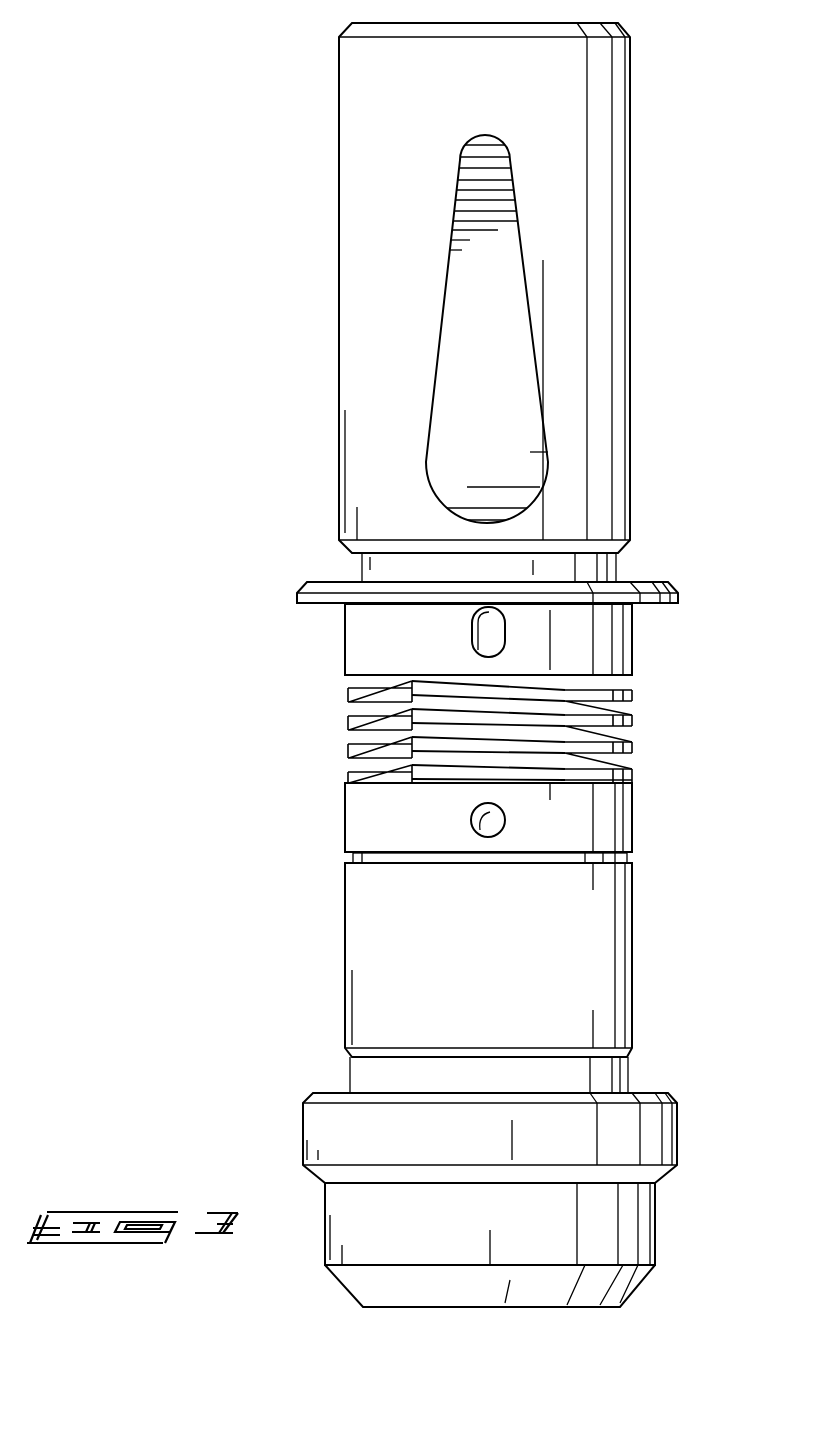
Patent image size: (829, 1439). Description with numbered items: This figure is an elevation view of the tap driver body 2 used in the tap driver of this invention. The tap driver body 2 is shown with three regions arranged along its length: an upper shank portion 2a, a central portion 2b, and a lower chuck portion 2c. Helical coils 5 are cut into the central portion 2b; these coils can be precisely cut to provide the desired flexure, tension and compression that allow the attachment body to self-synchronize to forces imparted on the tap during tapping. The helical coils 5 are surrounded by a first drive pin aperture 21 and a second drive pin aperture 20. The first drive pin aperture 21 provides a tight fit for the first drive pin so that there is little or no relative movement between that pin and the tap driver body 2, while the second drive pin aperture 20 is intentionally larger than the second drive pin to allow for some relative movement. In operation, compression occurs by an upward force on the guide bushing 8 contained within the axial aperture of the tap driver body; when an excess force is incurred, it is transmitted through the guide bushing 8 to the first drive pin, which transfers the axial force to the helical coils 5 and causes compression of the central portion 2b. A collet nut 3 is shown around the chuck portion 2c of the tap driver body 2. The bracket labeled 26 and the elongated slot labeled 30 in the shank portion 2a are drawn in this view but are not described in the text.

The tap driver body 2 is at (256, 225).
The shank portion 2a is at (602, 165).
The central portion 2b is at (268, 605).
The chuck portion 2c is at (378, 1000).
The collet nut 3 is at (657, 1133).
The helical coils 5 is at (357, 737).
The guide bushing 8 is at (438, 690).
The second drive pin aperture 20 is at (493, 632).
The first drive pin aperture 21 is at (476, 816).
The threaded section 26 is at (643, 673).
The elongated slot 30 is at (482, 380).